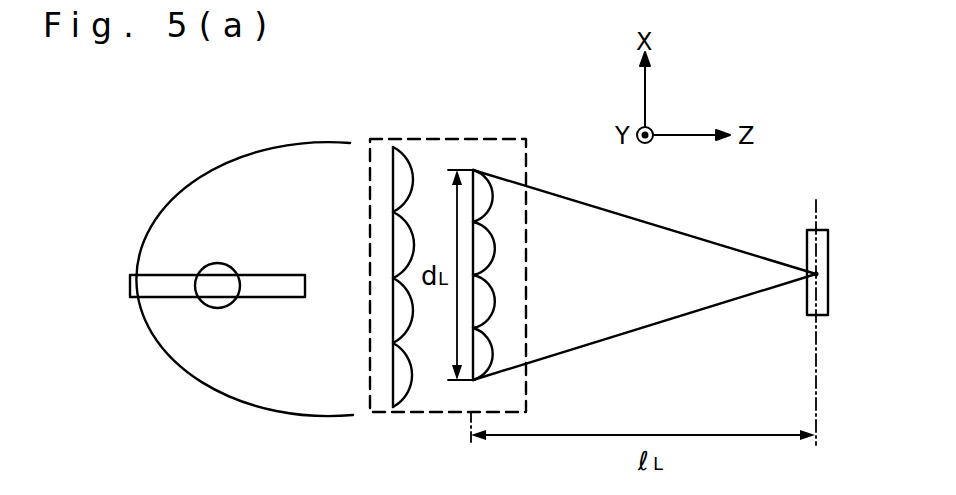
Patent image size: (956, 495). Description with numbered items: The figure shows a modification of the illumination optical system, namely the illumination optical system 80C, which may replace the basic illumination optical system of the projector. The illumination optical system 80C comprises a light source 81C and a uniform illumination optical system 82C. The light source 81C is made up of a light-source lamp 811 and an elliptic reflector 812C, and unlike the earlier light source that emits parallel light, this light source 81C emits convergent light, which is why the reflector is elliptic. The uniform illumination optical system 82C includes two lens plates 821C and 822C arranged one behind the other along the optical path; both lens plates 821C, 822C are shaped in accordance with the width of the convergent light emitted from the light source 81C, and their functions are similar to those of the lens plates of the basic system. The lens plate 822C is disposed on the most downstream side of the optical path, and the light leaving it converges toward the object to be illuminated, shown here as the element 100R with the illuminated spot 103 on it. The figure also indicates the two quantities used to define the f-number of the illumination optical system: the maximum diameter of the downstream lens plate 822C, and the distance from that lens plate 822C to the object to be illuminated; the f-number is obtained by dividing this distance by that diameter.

The illumination optical system 80C is at (348, 128).
The light source 81C is at (214, 170).
The light-source lamp 811 is at (233, 303).
The elliptic reflector 812C is at (287, 158).
The uniform illumination optical system 82C is at (462, 136).
The lens plate 821C is at (405, 412).
The lens plate 822C is at (493, 358).
The liquid crystal light valve 100R is at (806, 240).
The illuminated area on light valve 103 is at (829, 285).